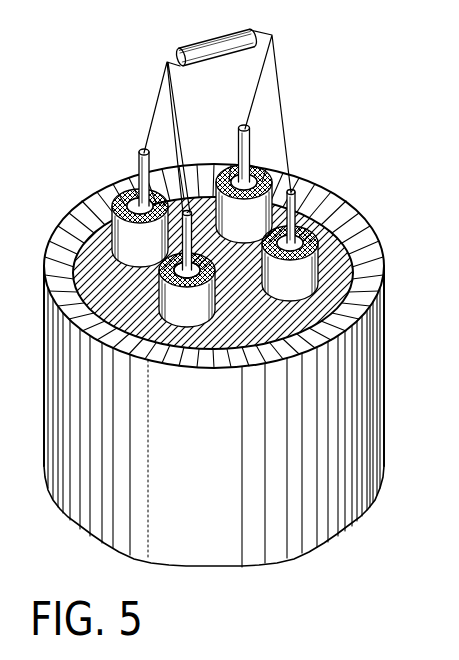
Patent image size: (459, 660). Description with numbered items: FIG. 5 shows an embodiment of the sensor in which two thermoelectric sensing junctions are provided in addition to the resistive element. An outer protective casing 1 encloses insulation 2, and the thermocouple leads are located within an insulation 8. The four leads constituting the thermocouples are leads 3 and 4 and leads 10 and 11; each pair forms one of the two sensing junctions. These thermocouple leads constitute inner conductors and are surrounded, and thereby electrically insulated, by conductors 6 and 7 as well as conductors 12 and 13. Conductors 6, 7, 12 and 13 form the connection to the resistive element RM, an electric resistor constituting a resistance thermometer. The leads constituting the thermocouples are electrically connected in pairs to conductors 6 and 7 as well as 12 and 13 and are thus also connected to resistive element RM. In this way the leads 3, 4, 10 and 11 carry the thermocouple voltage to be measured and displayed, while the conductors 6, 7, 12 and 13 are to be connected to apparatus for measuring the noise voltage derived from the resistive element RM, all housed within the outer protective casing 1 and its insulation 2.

The outer protective casing 1 is at (350, 307).
The insulation 2 is at (242, 368).
The wire 3 is at (143, 152).
The wire 4 is at (183, 245).
The conductor 6 is at (122, 194).
The conductor 7 is at (160, 278).
The insulation 8 is at (215, 263).
The lead 10 is at (242, 143).
The lead 11 is at (291, 212).
The conductor 12 is at (262, 176).
The conductor 13 is at (313, 250).
The electric resistor RM is at (203, 50).